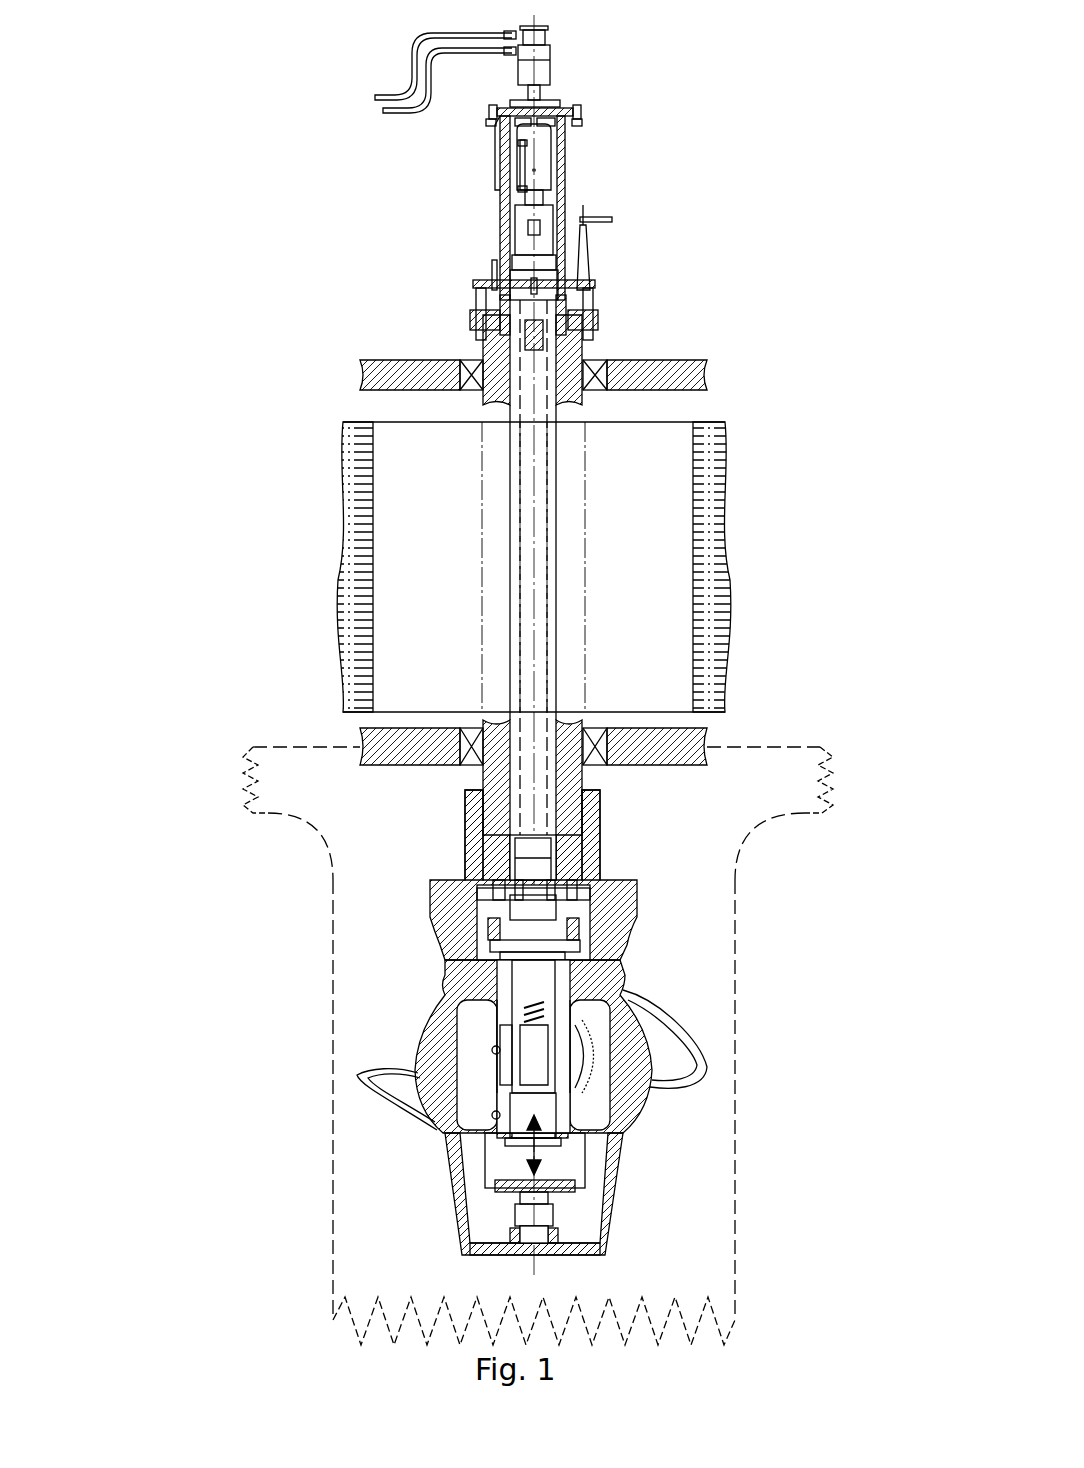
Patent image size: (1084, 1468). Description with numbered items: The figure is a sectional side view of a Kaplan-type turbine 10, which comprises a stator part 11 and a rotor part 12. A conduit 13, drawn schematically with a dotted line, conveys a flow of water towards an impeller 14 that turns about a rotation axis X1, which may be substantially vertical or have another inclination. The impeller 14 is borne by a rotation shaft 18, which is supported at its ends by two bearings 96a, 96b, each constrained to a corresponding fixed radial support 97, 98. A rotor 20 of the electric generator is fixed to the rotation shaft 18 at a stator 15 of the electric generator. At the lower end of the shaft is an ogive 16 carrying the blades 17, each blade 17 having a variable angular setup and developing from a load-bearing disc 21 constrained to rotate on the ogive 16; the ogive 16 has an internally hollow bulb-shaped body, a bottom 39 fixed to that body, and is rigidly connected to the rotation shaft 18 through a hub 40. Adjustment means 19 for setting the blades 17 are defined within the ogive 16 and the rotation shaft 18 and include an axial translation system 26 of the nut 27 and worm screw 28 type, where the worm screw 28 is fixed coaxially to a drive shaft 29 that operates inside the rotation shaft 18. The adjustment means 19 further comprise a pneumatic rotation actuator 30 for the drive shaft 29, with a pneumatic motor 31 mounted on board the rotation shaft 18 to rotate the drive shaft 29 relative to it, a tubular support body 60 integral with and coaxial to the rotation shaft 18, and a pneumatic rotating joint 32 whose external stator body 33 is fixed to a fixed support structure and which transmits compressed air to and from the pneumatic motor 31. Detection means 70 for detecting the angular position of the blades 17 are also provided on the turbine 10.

The Kaplan-type turbine 10 is at (752, 152).
The stator part 11 is at (722, 420).
The rotor part 12 is at (422, 815).
The conduit 13 is at (254, 744).
The impeller 14 is at (700, 1130).
The stator of the electric generator 15 is at (358, 522).
The ogive 16 is at (402, 1040).
The blade 17 is at (667, 1055).
The rotation shaft 18 is at (486, 353).
The adjustment means 19 is at (490, 195).
The rotor of the electric generator 20 is at (648, 523).
The load-bearing disc 21 is at (577, 1063).
The axial translation system 26 is at (530, 1093).
The nut 27 is at (527, 1143).
The worm screw 28 is at (537, 1018).
The drive shaft 29 is at (580, 352).
The pneumatic rotation actuator 30 is at (585, 150).
The pneumatic motor 31 is at (545, 235).
The pneumatic rotating joint 32 is at (553, 40).
The external stator body 33 is at (530, 72).
The bottom 39 is at (613, 1222).
The hub 40 is at (602, 868).
The tubular support body 60 is at (500, 220).
The detection means 70 is at (610, 265).
The bearing 96a is at (592, 380).
The bearing 96b is at (432, 727).
The fixed radial support 97 is at (372, 377).
The fixed radial support 98 is at (402, 752).
The rotation axis X1 is at (534, 555).